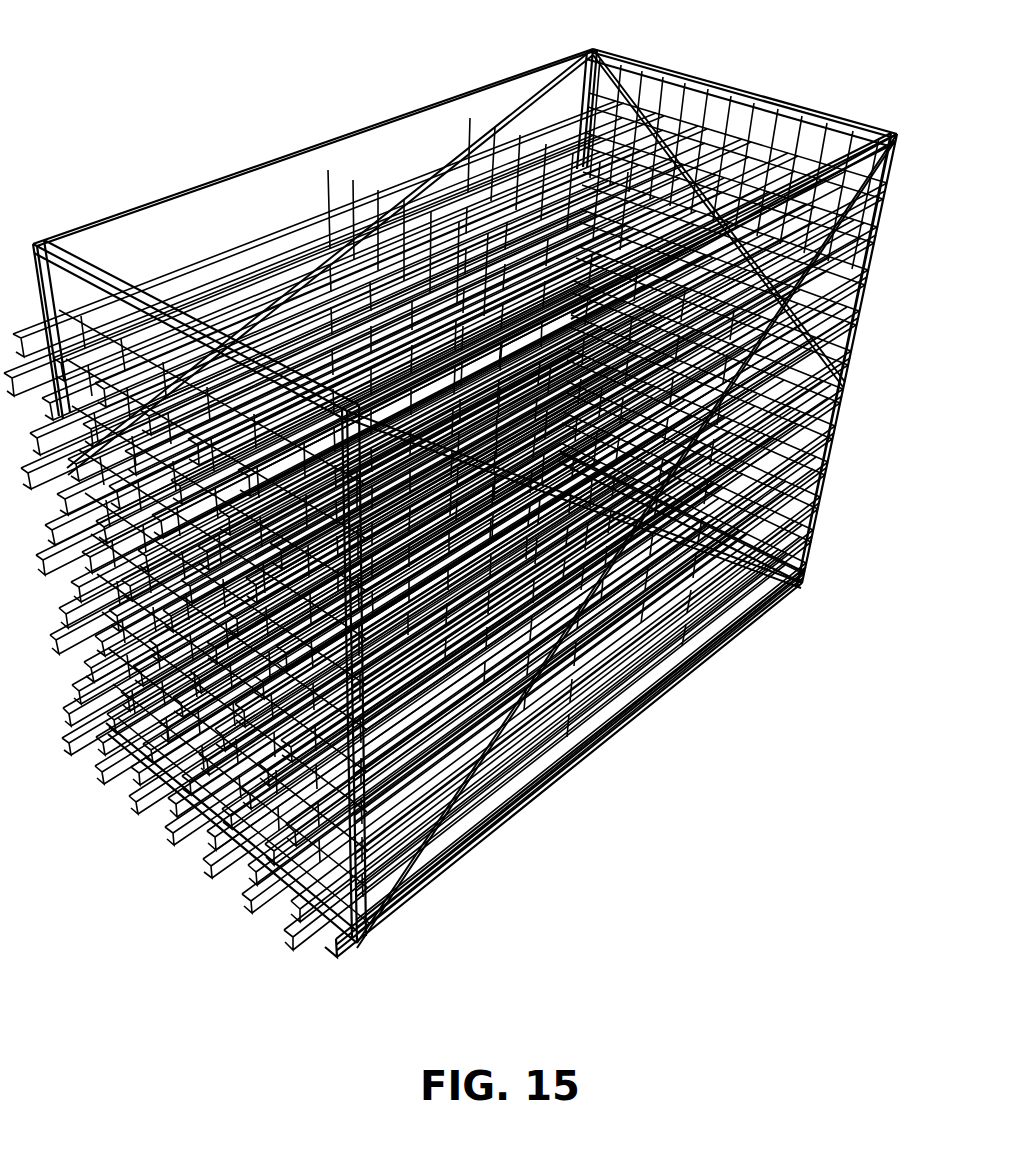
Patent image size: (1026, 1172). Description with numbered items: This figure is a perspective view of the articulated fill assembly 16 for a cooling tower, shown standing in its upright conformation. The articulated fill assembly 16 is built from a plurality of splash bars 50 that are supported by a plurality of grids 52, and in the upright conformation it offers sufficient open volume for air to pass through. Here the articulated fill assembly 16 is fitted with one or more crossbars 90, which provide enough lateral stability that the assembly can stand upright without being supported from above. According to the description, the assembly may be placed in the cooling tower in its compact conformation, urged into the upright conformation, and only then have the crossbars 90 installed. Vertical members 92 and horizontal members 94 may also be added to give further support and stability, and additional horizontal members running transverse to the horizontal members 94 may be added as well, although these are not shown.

The articulated fill assembly 16 is at (191, 51).
The splash bars 50 is at (140, 815).
The grids 52 is at (350, 190).
The crossbars 90 is at (740, 563).
The vertical members 92 is at (858, 345).
The horizontal members 94 is at (843, 153).